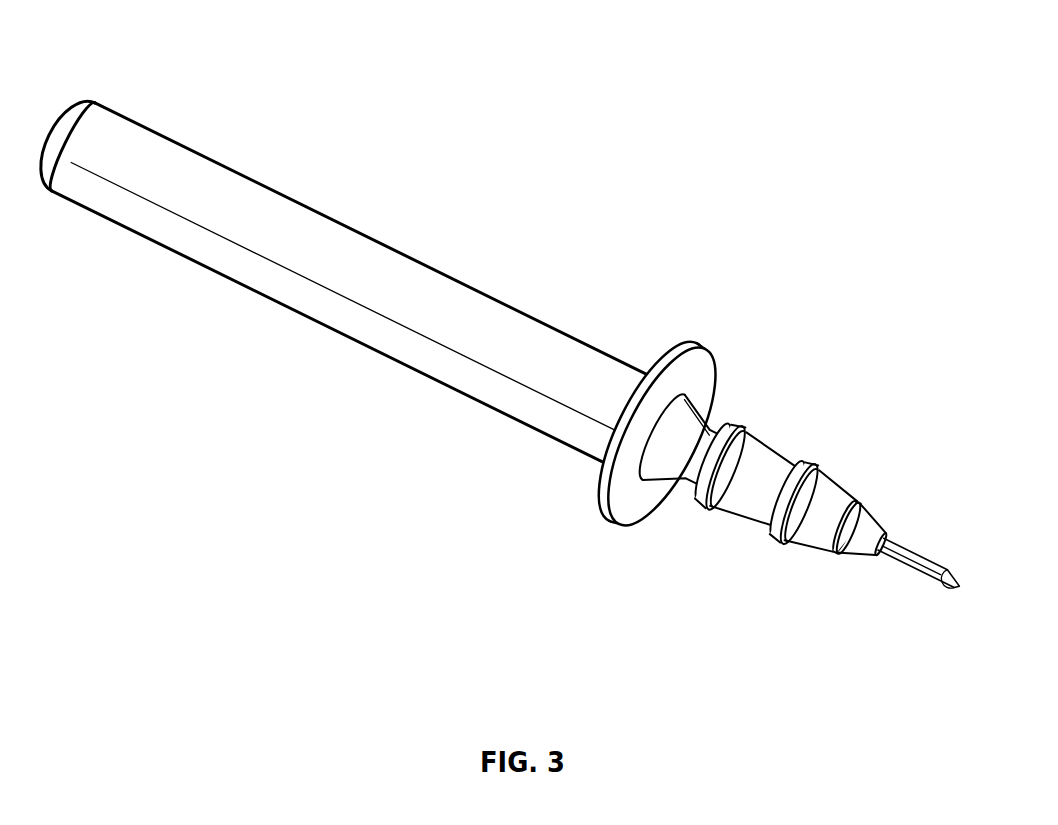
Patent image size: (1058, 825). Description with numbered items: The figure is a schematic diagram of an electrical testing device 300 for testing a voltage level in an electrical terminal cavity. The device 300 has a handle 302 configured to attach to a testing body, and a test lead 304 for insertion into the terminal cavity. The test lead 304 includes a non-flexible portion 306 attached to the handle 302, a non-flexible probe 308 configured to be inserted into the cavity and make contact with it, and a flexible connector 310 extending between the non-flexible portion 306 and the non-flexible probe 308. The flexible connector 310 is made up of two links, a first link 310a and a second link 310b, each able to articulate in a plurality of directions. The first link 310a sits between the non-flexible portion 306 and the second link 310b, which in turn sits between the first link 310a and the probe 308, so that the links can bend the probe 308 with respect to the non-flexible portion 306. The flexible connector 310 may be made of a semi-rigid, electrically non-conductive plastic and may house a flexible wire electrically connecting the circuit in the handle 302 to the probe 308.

The electrical testing device 300 is at (200, 19).
The handle 302 is at (352, 315).
The test lead 304 is at (682, 288).
The non-flexible portion 306 is at (699, 376).
The non-flexible probe 308 is at (908, 556).
The flexible connector 310 is at (800, 441).
The first link 310a is at (748, 472).
The second link 310b is at (828, 493).